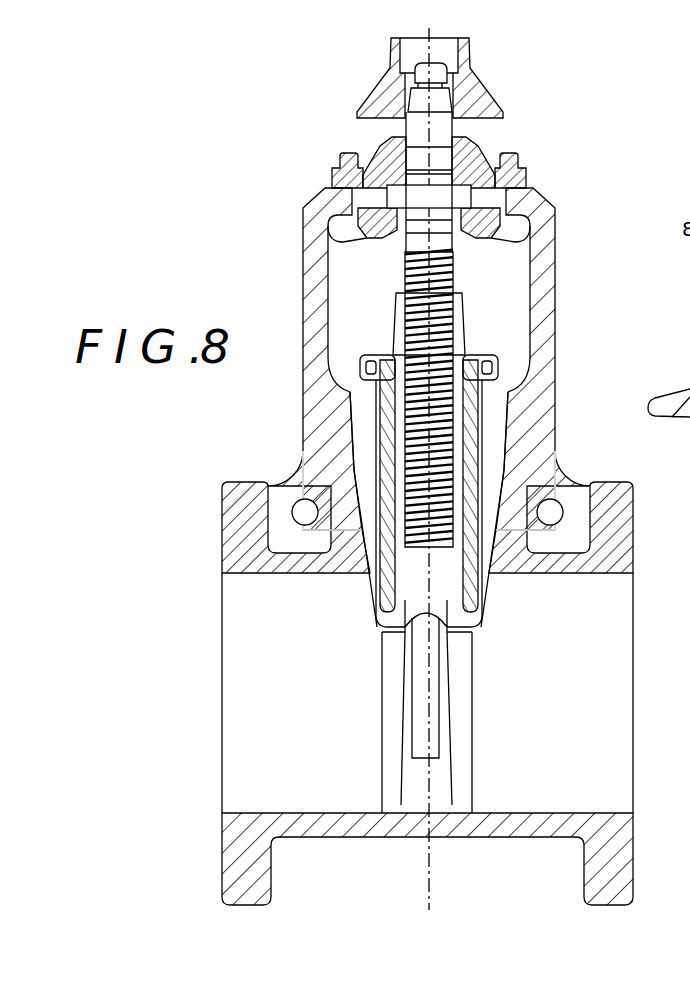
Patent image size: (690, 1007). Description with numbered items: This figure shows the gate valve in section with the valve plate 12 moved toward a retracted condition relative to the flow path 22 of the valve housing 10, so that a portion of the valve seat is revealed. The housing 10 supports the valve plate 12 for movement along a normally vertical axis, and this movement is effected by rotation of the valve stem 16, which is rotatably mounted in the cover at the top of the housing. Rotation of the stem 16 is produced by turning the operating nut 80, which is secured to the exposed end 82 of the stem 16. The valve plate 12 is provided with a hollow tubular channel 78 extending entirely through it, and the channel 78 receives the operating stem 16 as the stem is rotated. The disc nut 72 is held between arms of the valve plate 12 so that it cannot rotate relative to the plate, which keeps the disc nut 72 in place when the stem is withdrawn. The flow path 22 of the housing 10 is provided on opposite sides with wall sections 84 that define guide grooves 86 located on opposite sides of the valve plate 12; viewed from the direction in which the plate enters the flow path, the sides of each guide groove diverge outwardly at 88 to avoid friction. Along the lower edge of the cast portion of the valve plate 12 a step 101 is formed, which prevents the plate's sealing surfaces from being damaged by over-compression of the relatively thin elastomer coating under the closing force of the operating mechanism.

The valve housing 10 is at (222, 844).
The valve plate 12 is at (383, 562).
The valve stem 16 is at (405, 262).
The flow path 22 is at (617, 690).
The disc nut 72 is at (466, 324).
The hollow tubular channel 78 is at (402, 633).
The operating nut 80 is at (469, 68).
The exposed end of the stem 82 is at (412, 95).
The wall sections 84 is at (382, 740).
The guide grooves 86 is at (435, 690).
The diverging sides of guide groove 88 is at (488, 592).
The step 101 is at (482, 622).